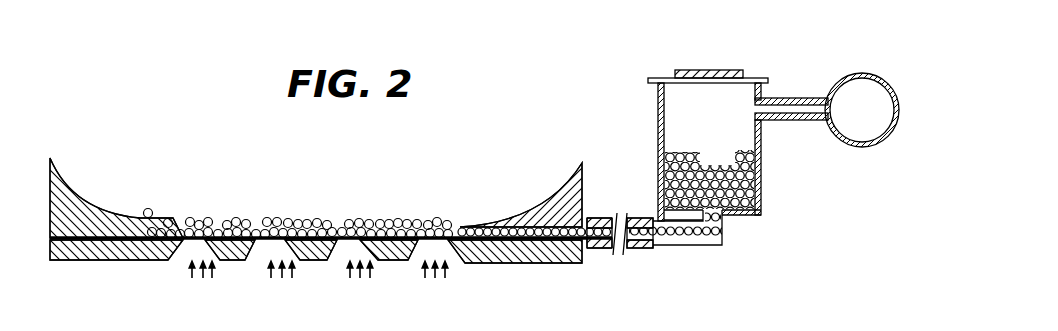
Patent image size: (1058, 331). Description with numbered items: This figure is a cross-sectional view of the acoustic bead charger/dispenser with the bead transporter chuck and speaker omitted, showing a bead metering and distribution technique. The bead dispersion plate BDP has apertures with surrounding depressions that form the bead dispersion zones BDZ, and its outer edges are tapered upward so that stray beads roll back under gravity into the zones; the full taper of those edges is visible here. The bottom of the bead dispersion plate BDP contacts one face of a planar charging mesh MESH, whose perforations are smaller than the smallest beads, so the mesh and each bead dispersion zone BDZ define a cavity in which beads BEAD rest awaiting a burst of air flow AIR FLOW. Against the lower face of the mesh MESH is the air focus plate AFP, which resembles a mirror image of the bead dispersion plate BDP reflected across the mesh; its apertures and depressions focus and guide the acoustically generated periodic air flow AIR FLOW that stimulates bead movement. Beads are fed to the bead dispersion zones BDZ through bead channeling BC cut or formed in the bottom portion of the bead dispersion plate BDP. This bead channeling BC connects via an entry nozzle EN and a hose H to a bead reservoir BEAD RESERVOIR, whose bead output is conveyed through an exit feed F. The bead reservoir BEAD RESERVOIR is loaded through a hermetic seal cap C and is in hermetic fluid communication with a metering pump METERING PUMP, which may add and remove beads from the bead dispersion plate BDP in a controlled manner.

The bead BEAD is at (146, 209).
The bead dispersion zone BDZ is at (267, 230).
The planar charging mesh MESH is at (120, 242).
The air flow AIR FLOW is at (318, 285).
The bead channeling BC is at (468, 226).
The bead dispersion plate BDP is at (547, 203).
The air focus plate AFP is at (547, 262).
The entry nozzle EN is at (597, 249).
The hose H is at (638, 216).
The exit feed F is at (685, 241).
The bead reservoir BEAD RESERVOIR is at (747, 128).
The hermetic seal cap C is at (723, 70).
The metering pump METERING PUMP is at (872, 88).